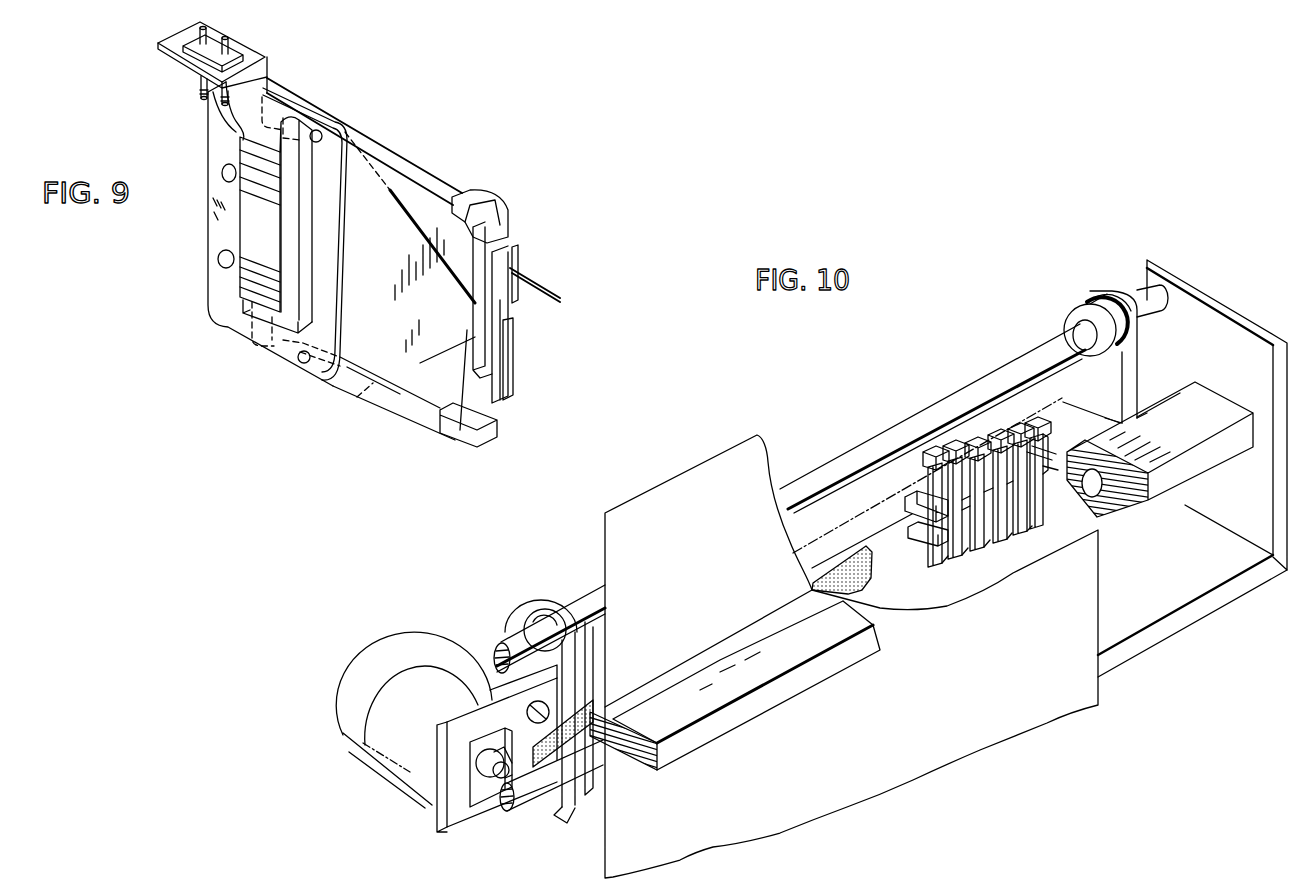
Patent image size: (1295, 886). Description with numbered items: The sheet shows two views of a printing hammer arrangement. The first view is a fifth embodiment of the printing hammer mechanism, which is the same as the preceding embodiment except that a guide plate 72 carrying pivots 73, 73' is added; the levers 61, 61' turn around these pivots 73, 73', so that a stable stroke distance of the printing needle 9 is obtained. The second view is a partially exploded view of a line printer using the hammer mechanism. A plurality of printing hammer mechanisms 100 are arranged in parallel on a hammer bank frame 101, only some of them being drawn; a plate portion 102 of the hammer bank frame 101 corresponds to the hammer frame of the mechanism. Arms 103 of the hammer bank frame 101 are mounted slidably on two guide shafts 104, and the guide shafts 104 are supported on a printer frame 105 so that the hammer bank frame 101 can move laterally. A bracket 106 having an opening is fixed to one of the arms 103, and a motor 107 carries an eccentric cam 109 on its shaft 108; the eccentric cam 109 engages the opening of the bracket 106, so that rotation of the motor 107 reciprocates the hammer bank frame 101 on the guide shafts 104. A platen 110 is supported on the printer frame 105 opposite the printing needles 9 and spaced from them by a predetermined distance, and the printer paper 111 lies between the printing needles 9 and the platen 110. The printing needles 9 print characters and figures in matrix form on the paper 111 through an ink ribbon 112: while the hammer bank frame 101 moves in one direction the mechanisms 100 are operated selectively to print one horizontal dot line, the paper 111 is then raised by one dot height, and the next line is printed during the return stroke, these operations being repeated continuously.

In FIG. 9, the lever 61 is at (364, 141).
In FIG. 9, the lever 61' is at (394, 399).
In FIG. 9, the guide plate 72 is at (336, 279).
In FIG. 9, the pivot 73 is at (341, 117).
In FIG. 9, the pivot 73' is at (291, 379).
In FIG. 10, the printing needle 9 is at (1040, 420).
In FIG. 10, the printing hammer mechanism 100 is at (930, 445).
In FIG. 10, the hammer bank frame 101 is at (1066, 257).
In FIG. 10, the plate portion 102 is at (1053, 430).
In FIG. 10, the arm 103 is at (1122, 298).
In FIG. 10, the guide shaft 104 is at (1030, 358).
In FIG. 10, the printer frame 105 is at (1228, 340).
In FIG. 10, the bracket 106 is at (452, 783).
In FIG. 10, the motor 107 is at (360, 680).
In FIG. 10, the shaft 108 is at (498, 778).
In FIG. 10, the eccentric cam 109 is at (478, 770).
In FIG. 10, the platen 110 is at (679, 720).
In FIG. 10, the printer paper 111 is at (647, 502).
In FIG. 10, the ink ribbon 112 is at (833, 573).